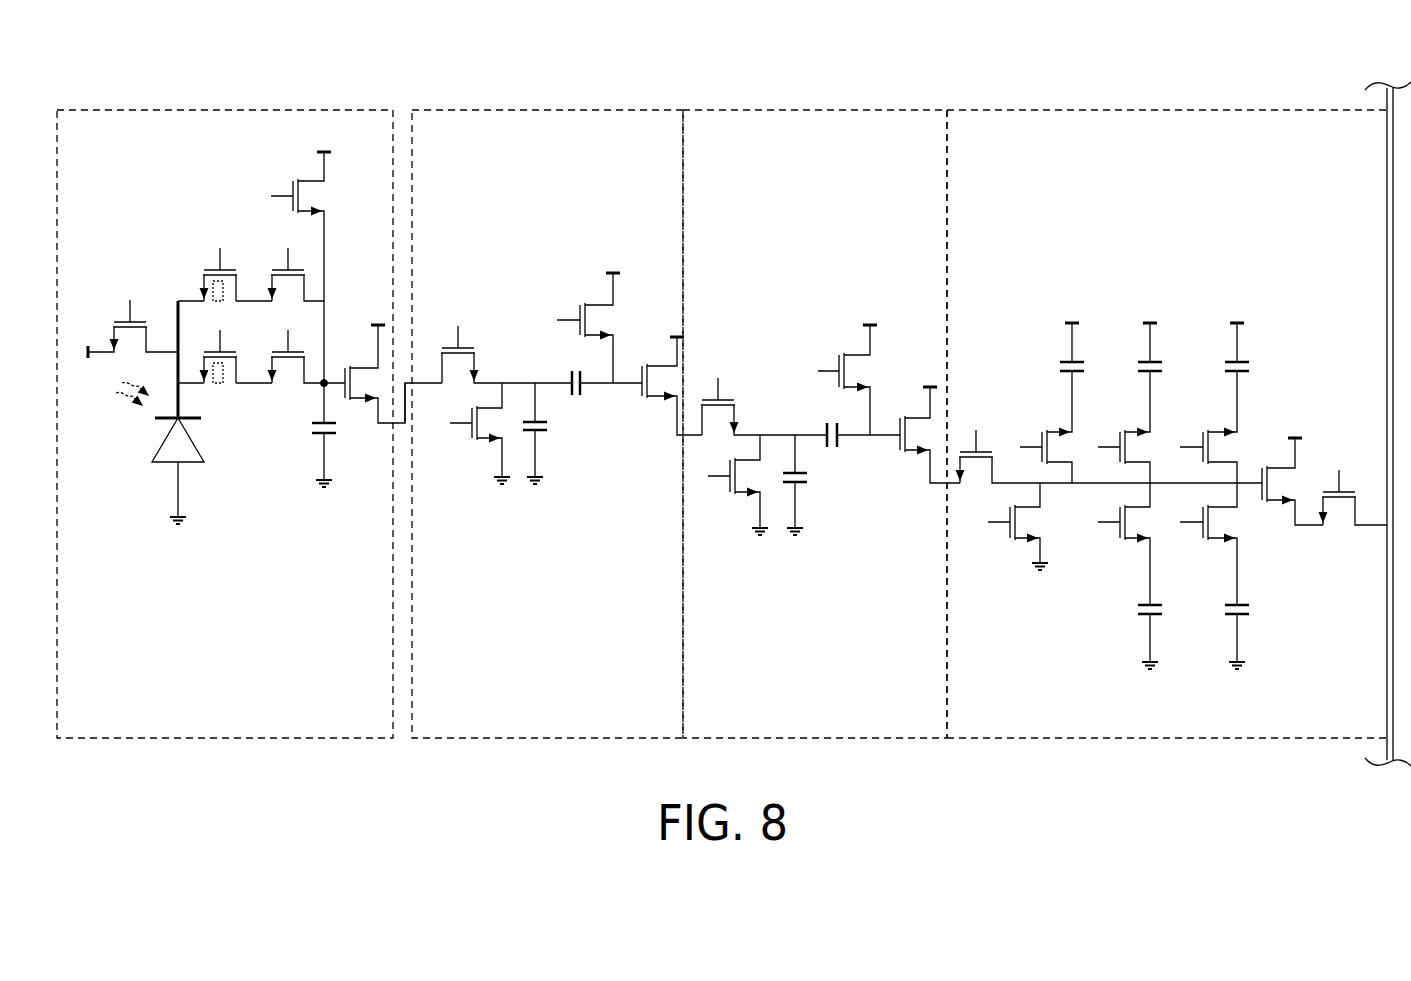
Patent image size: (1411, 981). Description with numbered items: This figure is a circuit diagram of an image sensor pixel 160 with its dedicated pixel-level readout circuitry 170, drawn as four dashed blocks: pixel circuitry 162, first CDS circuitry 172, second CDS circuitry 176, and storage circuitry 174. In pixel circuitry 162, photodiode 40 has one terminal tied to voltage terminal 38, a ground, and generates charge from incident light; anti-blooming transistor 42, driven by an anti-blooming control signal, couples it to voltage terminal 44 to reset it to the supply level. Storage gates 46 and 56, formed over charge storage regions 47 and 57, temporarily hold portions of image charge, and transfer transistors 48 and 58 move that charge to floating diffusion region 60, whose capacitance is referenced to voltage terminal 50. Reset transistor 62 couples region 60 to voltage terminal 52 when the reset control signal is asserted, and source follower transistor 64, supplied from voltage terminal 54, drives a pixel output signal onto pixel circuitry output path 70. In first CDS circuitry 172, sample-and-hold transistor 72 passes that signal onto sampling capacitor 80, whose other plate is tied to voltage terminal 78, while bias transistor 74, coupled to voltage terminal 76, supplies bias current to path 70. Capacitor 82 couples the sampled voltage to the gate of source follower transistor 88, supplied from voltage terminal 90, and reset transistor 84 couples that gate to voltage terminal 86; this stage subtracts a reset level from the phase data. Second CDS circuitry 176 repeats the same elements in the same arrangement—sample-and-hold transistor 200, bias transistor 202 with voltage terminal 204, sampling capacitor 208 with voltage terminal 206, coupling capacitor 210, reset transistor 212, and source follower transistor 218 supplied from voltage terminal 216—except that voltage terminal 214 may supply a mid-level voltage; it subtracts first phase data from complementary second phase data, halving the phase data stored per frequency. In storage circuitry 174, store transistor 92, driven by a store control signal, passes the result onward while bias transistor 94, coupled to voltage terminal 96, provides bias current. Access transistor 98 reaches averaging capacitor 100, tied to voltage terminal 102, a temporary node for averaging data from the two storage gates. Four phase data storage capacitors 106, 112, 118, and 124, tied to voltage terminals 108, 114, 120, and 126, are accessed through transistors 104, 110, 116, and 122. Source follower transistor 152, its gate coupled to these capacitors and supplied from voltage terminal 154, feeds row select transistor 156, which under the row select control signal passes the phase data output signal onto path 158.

The voltage terminal 38 is at (178, 530).
The photodiode 40 is at (174, 409).
The anti-blooming transistor 42 is at (114, 323).
The voltage terminal 44 is at (75, 352).
The storage gate 46 is at (205, 271).
The charge storage region 47 is at (225, 292).
The transfer transistor 48 is at (272, 271).
The voltage terminal 50 is at (341, 463).
The voltage terminal 52 is at (324, 143).
The voltage terminal 54 is at (378, 317).
The storage gate 56 is at (205, 353).
The charge storage region 57 is at (225, 374).
The transfer transistor 58 is at (272, 353).
The floating diffusion region 60 is at (322, 388).
The reset transistor 62 is at (294, 181).
The source follower transistor 64 is at (348, 366).
The pixel circuitry output path 70 is at (408, 380).
The sample-and-hold transistor 72 is at (476, 350).
The bias transistor 74 is at (475, 440).
The voltage terminal 76 is at (502, 489).
The voltage terminal 78 is at (535, 489).
The sampling capacitor 80 is at (549, 430).
The capacitor 82 is at (604, 371).
The reset transistor 84 is at (583, 303).
The voltage terminal 86 is at (613, 265).
The source follower transistor 88 is at (645, 399).
The voltage terminal 90 is at (673, 329).
The store transistor 92 is at (976, 473).
The storage bias transistor 94 is at (1012, 540).
The voltage terminal 96 is at (1040, 576).
The capacitor access transistor 98 is at (1044, 430).
The averaging capacitor 100 is at (1090, 353).
The voltage terminal 102 is at (1072, 315).
The capacitor access transistor 104 is at (1122, 430).
The capacitor 106 is at (1168, 353).
The voltage terminal 108 is at (1150, 315).
The capacitor access transistor 110 is at (1206, 430).
The capacitor 112 is at (1256, 353).
The voltage terminal 114 is at (1237, 315).
The capacitor access transistor 116 is at (1122, 540).
The capacitor 118 is at (1168, 631).
The voltage terminal 120 is at (1150, 675).
The capacitor access transistor 122 is at (1206, 540).
The capacitor 124 is at (1256, 631).
The voltage terminal 126 is at (1237, 675).
The source follower transistor 152 is at (1265, 503).
The voltage terminal 154 is at (1295, 430).
The row select transistor 156 is at (1357, 494).
The path 158 is at (1387, 345).
The image sensor pixel 160 is at (270, 48).
The pixel circuitry 162 is at (88, 108).
The readout circuitry 170 is at (482, 44).
The first CDS circuitry 172 is at (608, 108).
The storage circuitry 174 is at (1050, 108).
The second CDS circuitry 176 is at (765, 108).
The second sample and hold transistor 200 is at (736, 402).
The second bias transistor 202 is at (733, 494).
The ground terminal 204 is at (760, 541).
The ground terminal 206 is at (795, 541).
The second sample and hold capacitor 208 is at (814, 481).
The second coupling capacitor 210 is at (858, 422).
The second CDS reset transistor 212 is at (842, 353).
The voltage terminal 214 is at (870, 317).
The supply voltage terminal 216 is at (928, 379).
The second CDS source follower transistor 218 is at (904, 452).